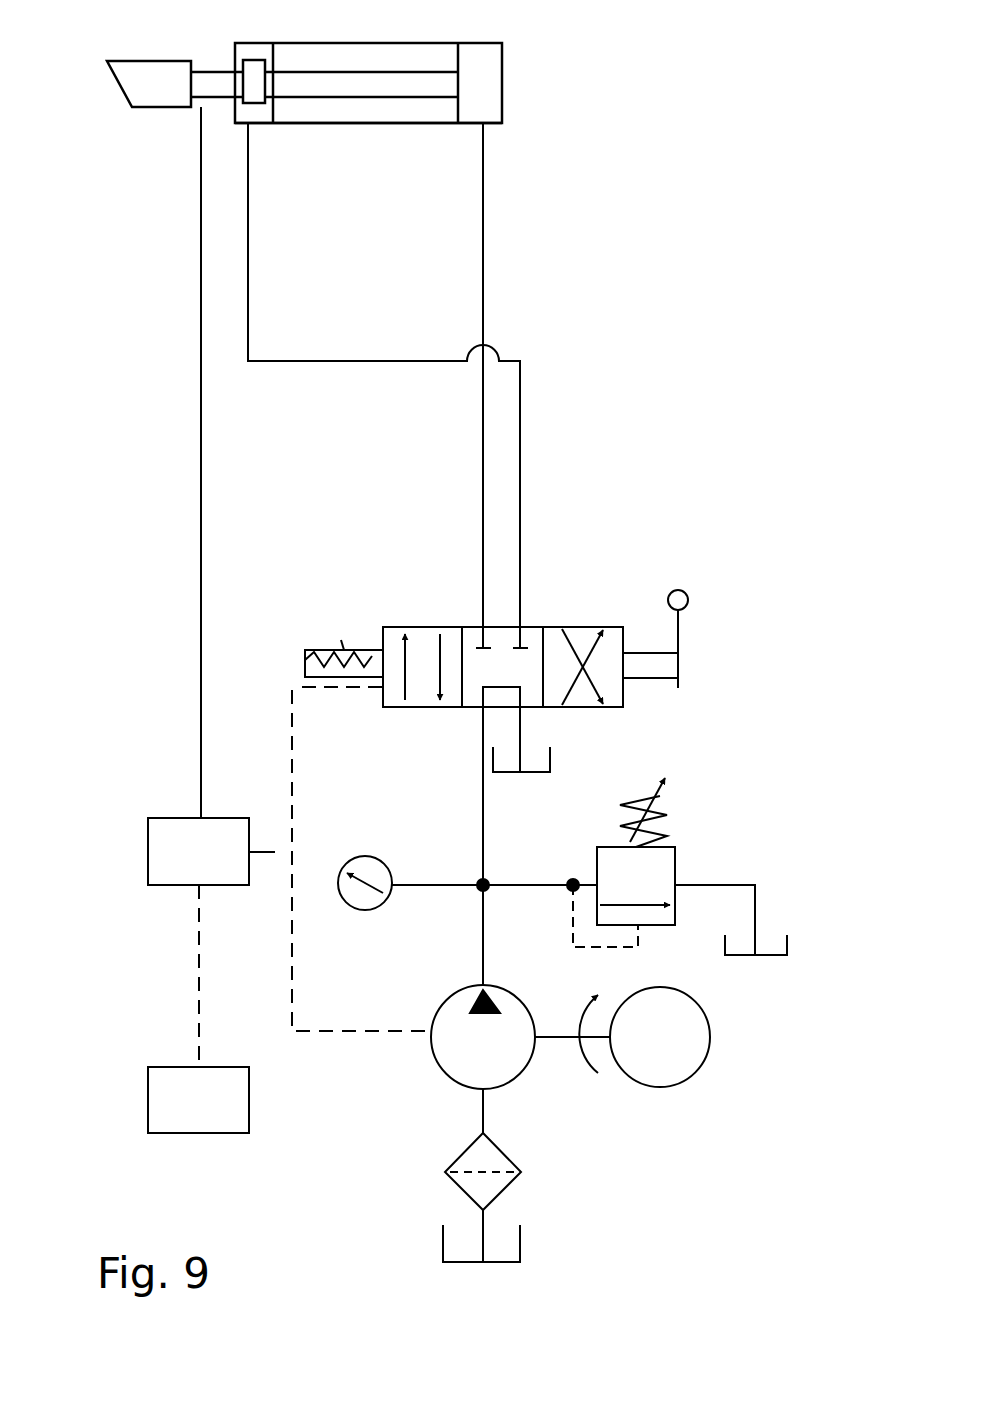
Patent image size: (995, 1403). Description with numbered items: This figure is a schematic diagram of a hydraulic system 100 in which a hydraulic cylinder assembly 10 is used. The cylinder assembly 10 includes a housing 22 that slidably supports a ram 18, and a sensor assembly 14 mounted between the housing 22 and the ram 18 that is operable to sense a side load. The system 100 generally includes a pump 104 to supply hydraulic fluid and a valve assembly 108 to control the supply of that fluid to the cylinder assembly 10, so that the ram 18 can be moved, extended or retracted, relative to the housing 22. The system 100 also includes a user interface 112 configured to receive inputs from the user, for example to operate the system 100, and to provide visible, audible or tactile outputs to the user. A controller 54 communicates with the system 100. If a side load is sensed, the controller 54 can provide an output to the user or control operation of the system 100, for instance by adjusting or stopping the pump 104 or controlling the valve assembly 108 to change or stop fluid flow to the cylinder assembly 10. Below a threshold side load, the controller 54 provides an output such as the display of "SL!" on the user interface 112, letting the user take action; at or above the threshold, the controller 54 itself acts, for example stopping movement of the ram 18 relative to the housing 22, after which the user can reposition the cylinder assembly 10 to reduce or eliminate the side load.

The hydraulic cylinder assembly 10 is at (520, 66).
The sensor assembly 14 is at (240, 67).
The ram 18 is at (338, 94).
The housing 22 is at (395, 124).
The controller 54 is at (147, 852).
The hydraulic system 100 is at (647, 429).
The pump 104 is at (519, 1078).
The valve assembly 108 is at (553, 626).
The user interface 112 is at (147, 1092).